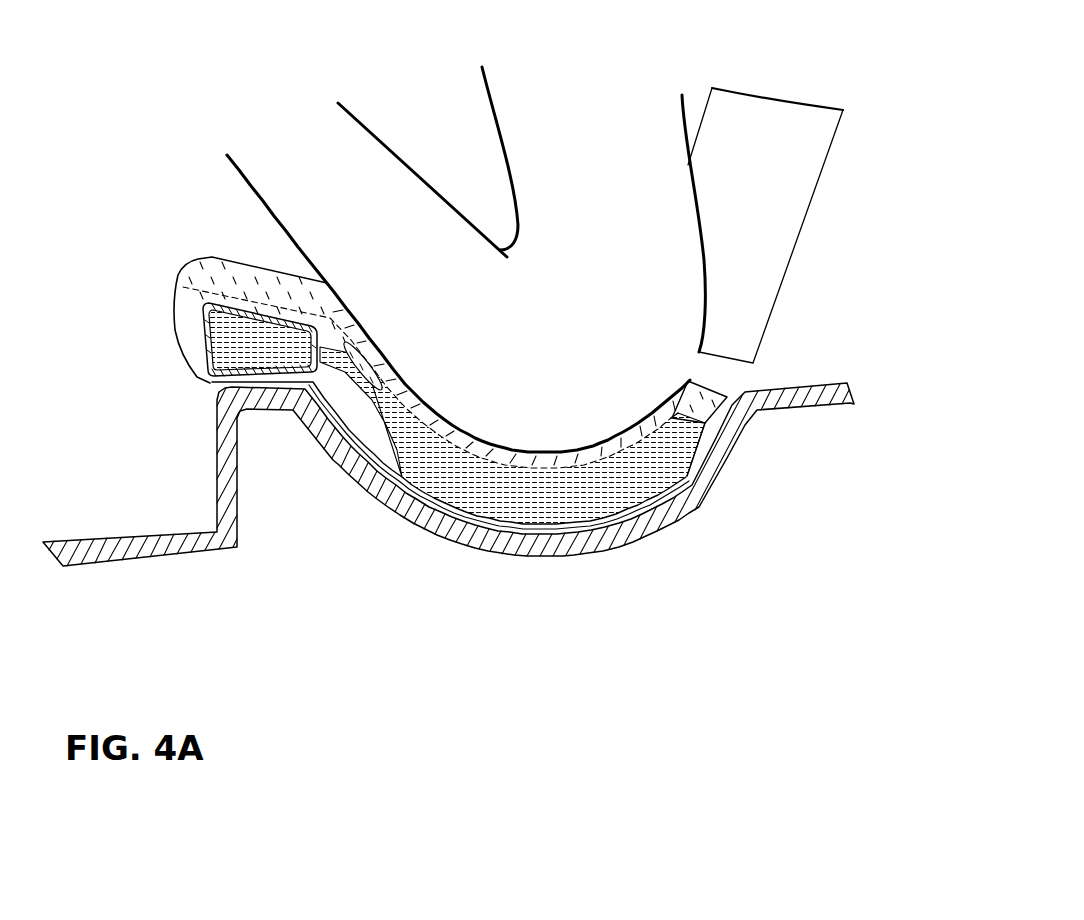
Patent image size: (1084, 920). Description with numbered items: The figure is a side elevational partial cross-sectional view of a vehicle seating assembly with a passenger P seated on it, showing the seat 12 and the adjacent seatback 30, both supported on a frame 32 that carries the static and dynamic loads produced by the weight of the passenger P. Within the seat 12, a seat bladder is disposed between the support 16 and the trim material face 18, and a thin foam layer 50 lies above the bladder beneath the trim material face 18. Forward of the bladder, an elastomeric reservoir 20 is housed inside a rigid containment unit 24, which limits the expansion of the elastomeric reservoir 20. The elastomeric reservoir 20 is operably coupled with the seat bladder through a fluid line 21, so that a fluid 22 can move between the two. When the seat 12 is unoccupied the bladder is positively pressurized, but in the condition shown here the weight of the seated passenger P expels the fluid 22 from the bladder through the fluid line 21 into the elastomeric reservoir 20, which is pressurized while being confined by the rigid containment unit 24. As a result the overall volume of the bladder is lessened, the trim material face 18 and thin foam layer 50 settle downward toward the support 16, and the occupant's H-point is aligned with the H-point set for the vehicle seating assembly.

The seat 12 is at (193, 277).
The support 16 is at (650, 515).
The trim material face 18 is at (232, 257).
The elastomeric reservoir 20 is at (225, 347).
The fluid line 21 is at (343, 385).
The fluid 22 is at (577, 492).
The rigid containment unit 24 is at (203, 322).
The seatback 30 is at (735, 118).
The frame 32 is at (793, 412).
The thin foam layer 50 is at (427, 483).
The passenger P is at (512, 115).